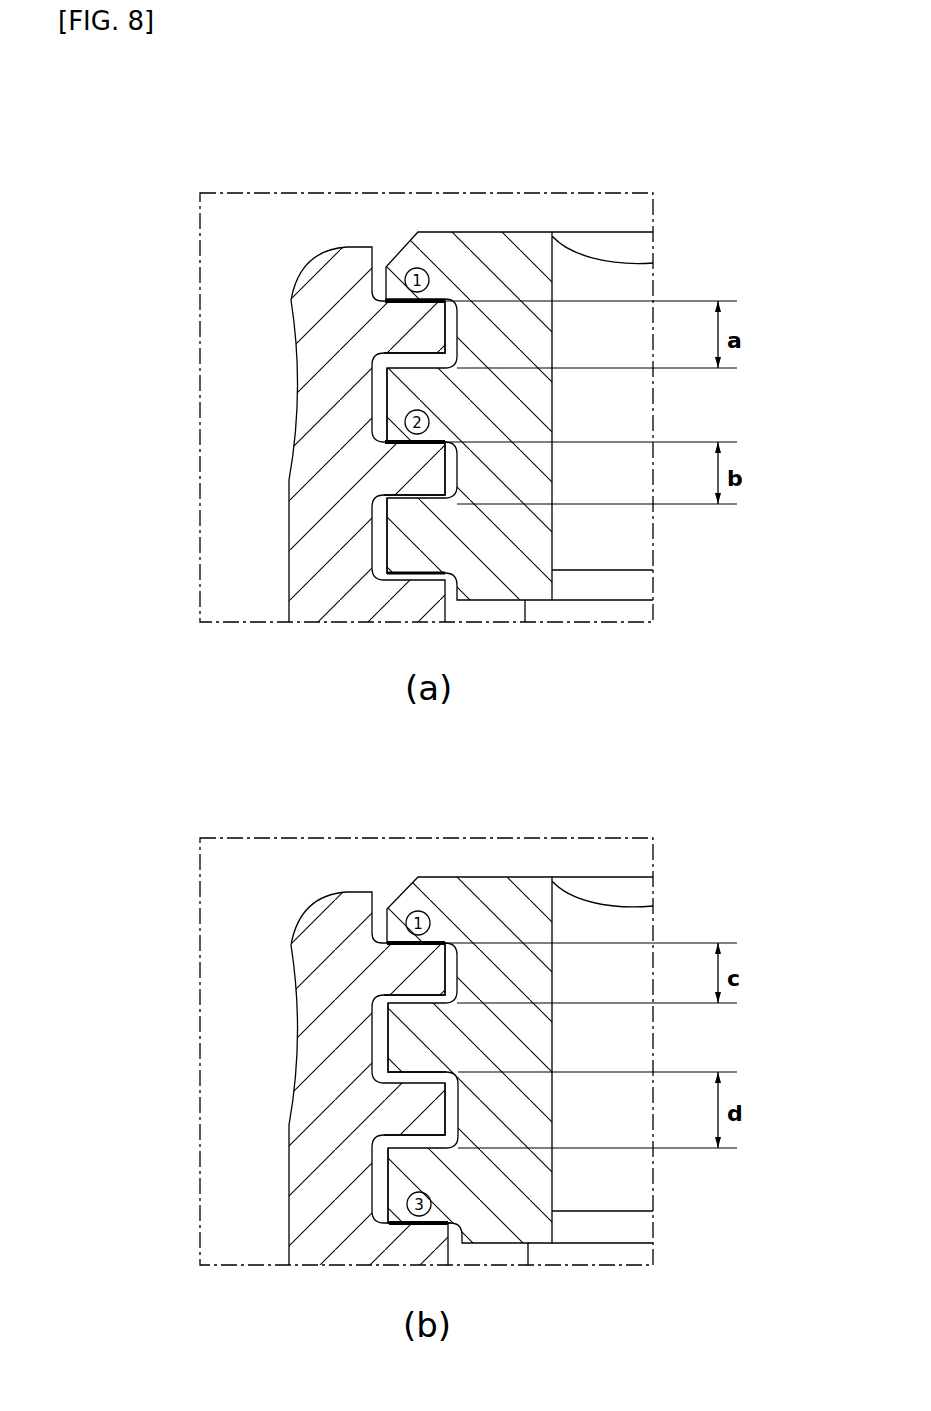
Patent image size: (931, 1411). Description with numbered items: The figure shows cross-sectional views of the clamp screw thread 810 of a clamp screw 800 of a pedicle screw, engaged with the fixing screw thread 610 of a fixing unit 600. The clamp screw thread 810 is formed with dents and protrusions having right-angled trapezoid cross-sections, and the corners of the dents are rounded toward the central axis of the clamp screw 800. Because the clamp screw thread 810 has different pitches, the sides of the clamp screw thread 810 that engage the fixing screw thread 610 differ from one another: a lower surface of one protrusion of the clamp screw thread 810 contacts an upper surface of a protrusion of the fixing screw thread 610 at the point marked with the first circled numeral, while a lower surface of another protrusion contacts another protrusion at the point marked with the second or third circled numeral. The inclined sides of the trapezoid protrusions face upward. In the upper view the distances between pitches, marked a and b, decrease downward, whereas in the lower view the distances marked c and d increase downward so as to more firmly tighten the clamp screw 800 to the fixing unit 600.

The fixing unit 600 is at (307, 262).
The fixing screw thread 610 is at (432, 470).
The clamp screw 800 is at (488, 240).
The clamp screw thread 810 is at (401, 398).